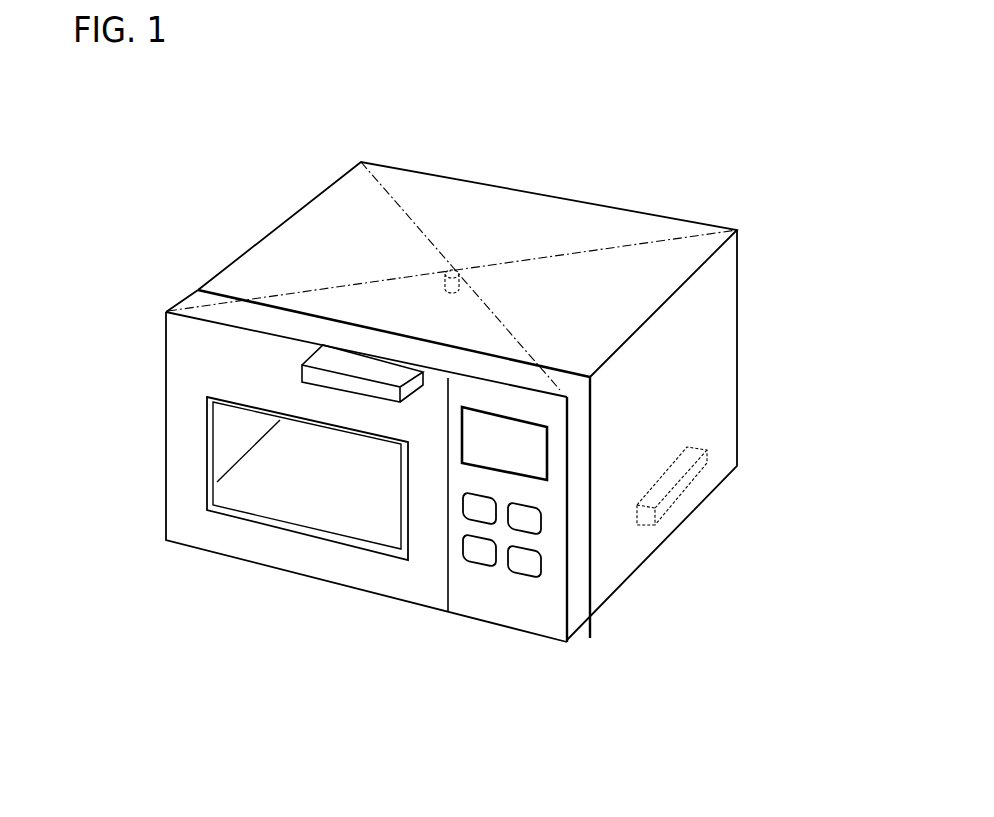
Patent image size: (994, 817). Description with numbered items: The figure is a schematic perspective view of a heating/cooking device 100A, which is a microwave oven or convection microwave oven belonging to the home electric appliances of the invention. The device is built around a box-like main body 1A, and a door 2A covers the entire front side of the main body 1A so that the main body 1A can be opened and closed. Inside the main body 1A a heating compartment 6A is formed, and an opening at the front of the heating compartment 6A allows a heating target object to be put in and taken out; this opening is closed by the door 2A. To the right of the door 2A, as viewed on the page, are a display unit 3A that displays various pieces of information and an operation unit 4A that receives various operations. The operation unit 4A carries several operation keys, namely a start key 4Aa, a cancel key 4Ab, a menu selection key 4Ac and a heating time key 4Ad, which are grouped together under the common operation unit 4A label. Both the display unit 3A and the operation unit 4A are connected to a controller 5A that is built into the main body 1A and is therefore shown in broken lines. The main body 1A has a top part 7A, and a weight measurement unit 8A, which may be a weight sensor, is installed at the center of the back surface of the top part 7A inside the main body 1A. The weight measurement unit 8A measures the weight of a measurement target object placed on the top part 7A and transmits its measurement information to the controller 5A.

The heating/cooking device 100A is at (185, 241).
The main body 1A is at (737, 293).
The door 2A is at (183, 368).
The display unit 3A is at (530, 450).
The operation unit 4A is at (415, 725).
The start key 4Aa is at (482, 558).
The cancel key 4Ab is at (477, 527).
The menu selection key 4Ac is at (518, 527).
The heating time key 4Ad is at (528, 567).
The controller 5A is at (707, 462).
The heating compartment 6A is at (295, 448).
The top part 7A is at (515, 212).
The weight measurement unit 8A is at (452, 268).